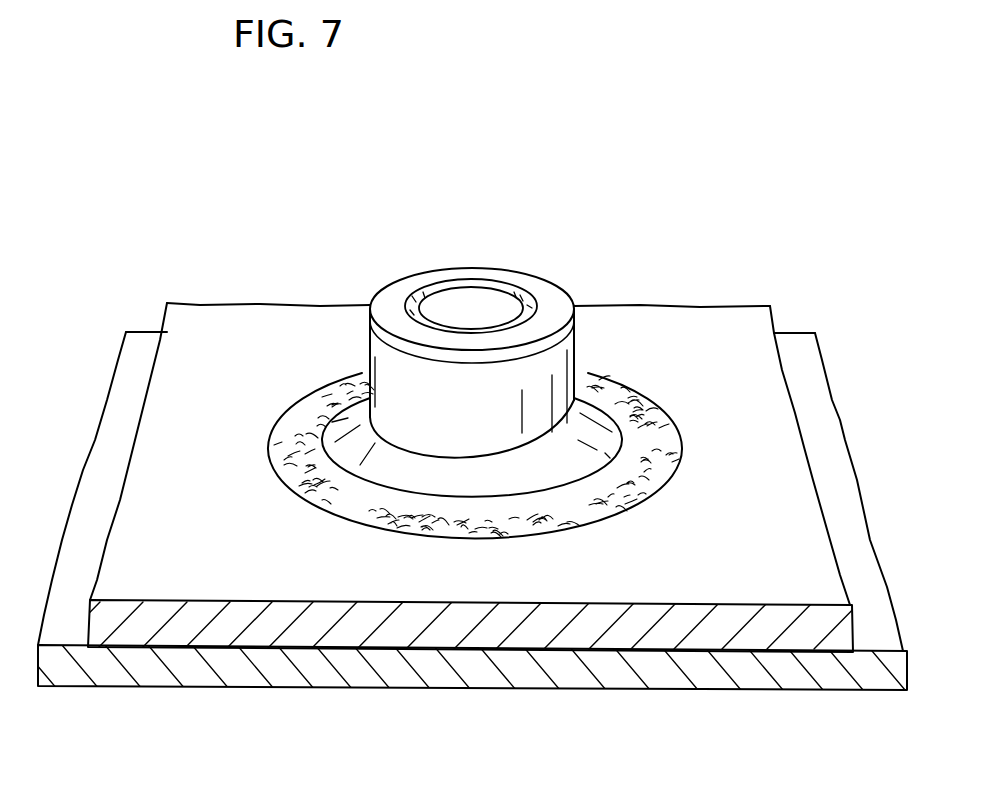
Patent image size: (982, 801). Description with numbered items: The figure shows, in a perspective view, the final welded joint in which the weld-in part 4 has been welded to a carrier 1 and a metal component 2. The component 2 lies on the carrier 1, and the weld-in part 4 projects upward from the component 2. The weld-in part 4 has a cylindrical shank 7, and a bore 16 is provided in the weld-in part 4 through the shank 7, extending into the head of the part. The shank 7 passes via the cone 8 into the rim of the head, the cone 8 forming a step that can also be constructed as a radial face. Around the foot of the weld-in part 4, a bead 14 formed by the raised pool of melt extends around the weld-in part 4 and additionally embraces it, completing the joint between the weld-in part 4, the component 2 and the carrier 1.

The carrier 1 is at (822, 673).
The component 2 is at (673, 637).
The weld-in part 4 is at (539, 285).
The shank 7 is at (385, 357).
The cone 8 is at (602, 422).
The bead 14 is at (613, 495).
The bore 16 is at (462, 303).